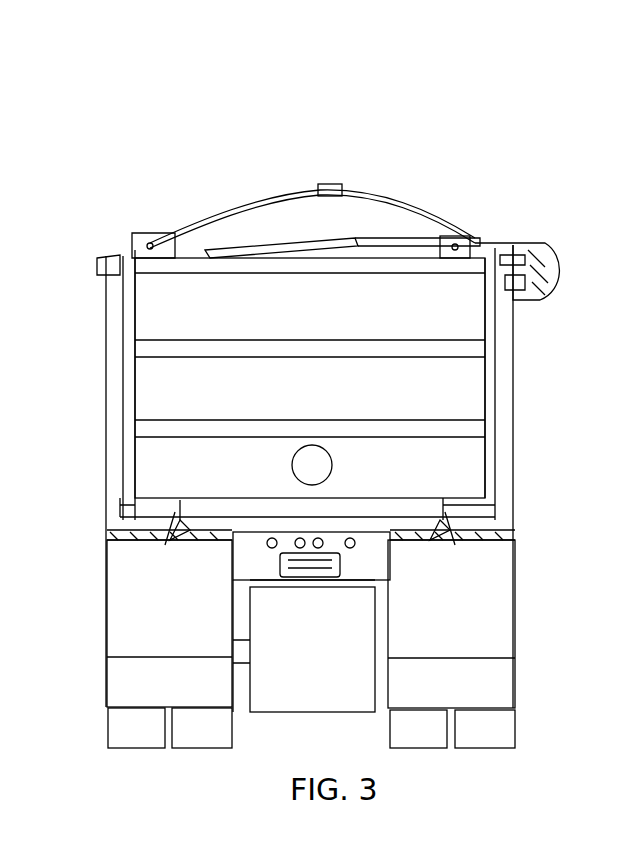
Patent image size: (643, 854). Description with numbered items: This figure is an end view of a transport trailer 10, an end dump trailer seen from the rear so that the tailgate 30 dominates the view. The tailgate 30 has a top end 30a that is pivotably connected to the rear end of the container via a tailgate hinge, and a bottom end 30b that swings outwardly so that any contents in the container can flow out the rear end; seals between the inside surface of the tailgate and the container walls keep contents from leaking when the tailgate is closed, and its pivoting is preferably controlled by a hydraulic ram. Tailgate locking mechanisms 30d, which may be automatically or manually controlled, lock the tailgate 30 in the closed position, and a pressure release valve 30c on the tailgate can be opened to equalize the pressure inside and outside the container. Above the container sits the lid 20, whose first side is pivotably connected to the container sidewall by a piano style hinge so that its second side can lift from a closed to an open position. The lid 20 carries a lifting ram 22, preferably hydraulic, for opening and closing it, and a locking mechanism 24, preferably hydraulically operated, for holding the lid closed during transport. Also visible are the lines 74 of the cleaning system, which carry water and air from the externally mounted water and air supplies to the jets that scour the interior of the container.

The transport trailer 10 is at (457, 88).
The lid 20 is at (232, 205).
The lifting ram 22 is at (300, 240).
The locking mechanism 24 is at (147, 243).
The tailgate 30 is at (485, 385).
The top end 30a is at (465, 245).
The bottom end 30b is at (450, 545).
The pressure release valve 30c is at (330, 460).
The tailgate locking mechanisms 30d is at (120, 505).
The lines 74 is at (555, 243).